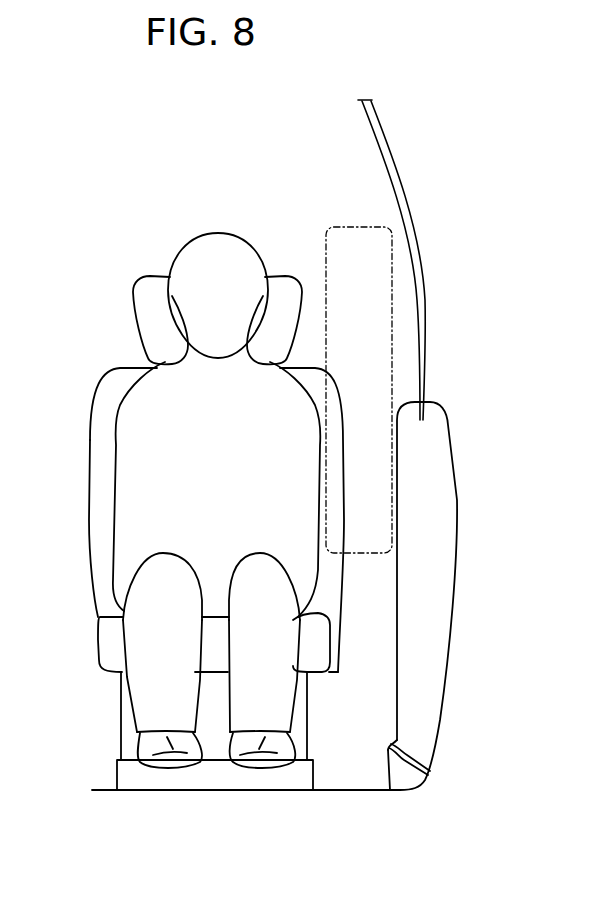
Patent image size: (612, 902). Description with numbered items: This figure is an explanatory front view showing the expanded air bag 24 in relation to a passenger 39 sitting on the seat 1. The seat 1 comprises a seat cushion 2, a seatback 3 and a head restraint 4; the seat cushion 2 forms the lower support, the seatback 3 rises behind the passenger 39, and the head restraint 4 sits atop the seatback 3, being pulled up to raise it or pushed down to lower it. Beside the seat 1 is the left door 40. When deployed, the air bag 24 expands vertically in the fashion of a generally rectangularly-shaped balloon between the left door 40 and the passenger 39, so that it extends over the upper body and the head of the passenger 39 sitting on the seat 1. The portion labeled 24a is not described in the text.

The seat 1 is at (84, 438).
The seat cushion 2 is at (98, 653).
The seatback 3 is at (88, 530).
The head restraint 4 is at (133, 283).
The passenger 39 is at (123, 400).
The air bag 24 is at (340, 225).
The airbag inflator / gas supply 24a is at (375, 328).
The left door 40 is at (462, 443).